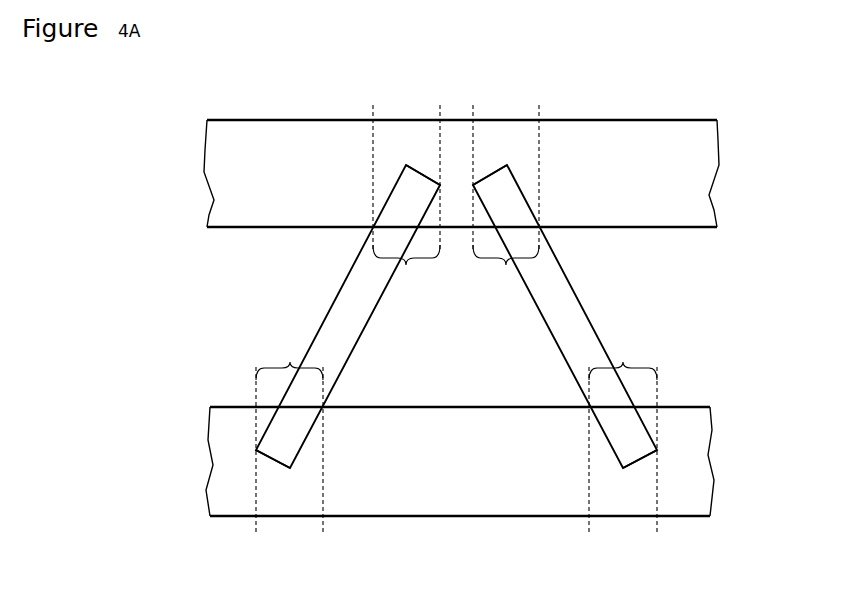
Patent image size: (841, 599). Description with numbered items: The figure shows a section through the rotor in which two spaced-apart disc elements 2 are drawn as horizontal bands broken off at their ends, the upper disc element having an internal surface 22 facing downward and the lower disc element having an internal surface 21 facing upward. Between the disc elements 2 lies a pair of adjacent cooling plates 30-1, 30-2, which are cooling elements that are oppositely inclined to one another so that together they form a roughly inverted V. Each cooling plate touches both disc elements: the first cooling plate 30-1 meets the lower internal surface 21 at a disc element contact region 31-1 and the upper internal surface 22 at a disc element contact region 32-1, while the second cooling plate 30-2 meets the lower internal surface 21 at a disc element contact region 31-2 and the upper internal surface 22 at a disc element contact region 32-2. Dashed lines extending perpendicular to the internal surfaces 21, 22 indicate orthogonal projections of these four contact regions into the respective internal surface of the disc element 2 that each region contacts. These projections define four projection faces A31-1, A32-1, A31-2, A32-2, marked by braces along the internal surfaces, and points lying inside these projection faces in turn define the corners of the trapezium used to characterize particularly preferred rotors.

The disc element 2 is at (476, 324).
The internal surface of the disc element 21 is at (690, 406).
The internal surface of the disc element 22 is at (637, 230).
The cooling plate 30-1 is at (358, 310).
The cooling plate 30-2 is at (565, 313).
The disc element contact region 31-1 is at (285, 438).
The disc element contact region 31-2 is at (633, 446).
The disc element contact region 32-1 is at (413, 183).
The disc element contact region 32-2 is at (497, 183).
The projection face A31-1 is at (290, 362).
The projection face A31-2 is at (623, 362).
The projection face A32-1 is at (406, 265).
The projection face A32-2 is at (506, 265).